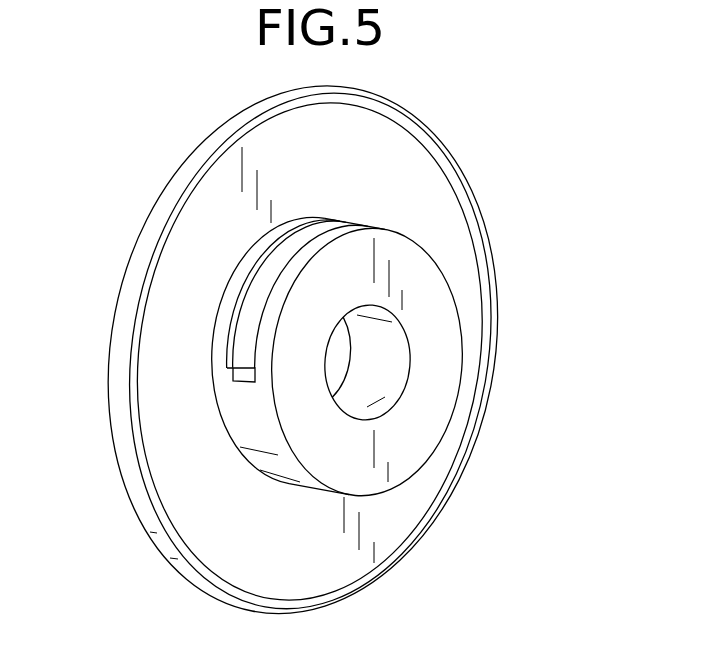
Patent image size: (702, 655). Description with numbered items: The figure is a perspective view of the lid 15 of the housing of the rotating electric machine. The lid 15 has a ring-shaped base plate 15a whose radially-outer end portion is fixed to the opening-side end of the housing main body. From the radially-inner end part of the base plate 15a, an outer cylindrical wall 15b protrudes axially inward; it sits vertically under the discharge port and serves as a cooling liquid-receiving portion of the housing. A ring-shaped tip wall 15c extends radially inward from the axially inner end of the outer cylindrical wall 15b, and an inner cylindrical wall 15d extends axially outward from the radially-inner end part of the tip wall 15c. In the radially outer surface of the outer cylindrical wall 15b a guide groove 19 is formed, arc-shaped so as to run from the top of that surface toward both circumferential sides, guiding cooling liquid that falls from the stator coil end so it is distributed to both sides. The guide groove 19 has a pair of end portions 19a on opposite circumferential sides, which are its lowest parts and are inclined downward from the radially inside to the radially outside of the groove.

The lid 15 is at (160, 142).
The base plate 15a is at (365, 148).
The outer cylindrical wall 15b is at (370, 228).
The tip wall 15c is at (438, 310).
The inner cylindrical wall 15d is at (363, 407).
The guide groove 19 is at (262, 300).
The end portion 19a is at (240, 378).